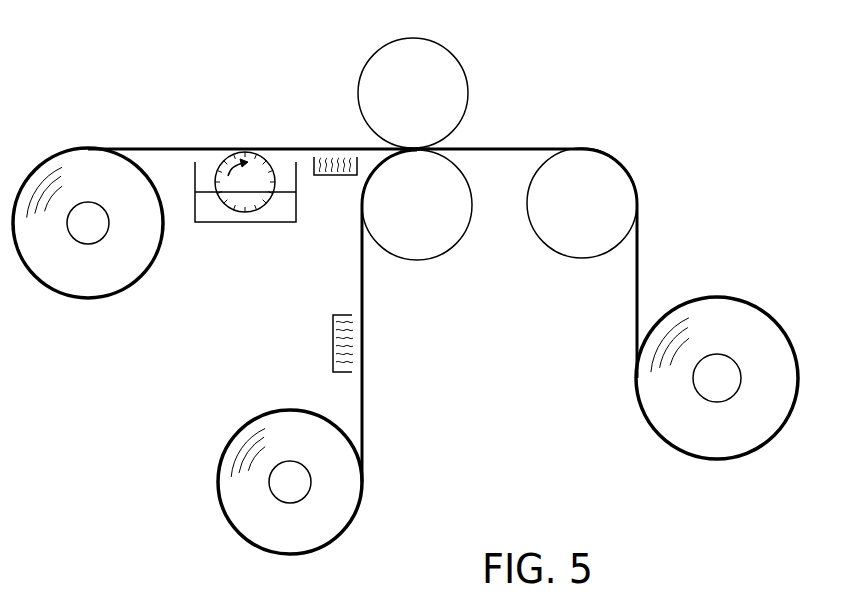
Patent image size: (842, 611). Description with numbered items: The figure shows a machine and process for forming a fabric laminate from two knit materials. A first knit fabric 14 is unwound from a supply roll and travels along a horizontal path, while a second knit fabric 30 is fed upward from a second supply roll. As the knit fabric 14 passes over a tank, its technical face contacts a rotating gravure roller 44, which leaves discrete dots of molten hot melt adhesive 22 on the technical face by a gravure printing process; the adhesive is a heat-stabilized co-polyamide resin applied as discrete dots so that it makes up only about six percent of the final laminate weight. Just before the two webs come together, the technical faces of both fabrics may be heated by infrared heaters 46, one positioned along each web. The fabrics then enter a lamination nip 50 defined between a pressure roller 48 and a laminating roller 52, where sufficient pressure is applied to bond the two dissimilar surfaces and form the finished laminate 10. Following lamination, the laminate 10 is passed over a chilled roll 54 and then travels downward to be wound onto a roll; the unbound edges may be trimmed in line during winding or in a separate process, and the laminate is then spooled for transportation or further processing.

The knit fabric 14 is at (147, 148).
The gravure roller 44 is at (267, 157).
The hot melt adhesive 22 is at (272, 213).
The infrared heaters 46 is at (330, 178).
The laminating roller 52 is at (413, 93).
The pressure roller 48 is at (417, 205).
The chilled roll 54 is at (582, 203).
The lamination nip 50 is at (463, 138).
The finished laminate 10 is at (640, 268).
The knit fabric 30 is at (365, 407).